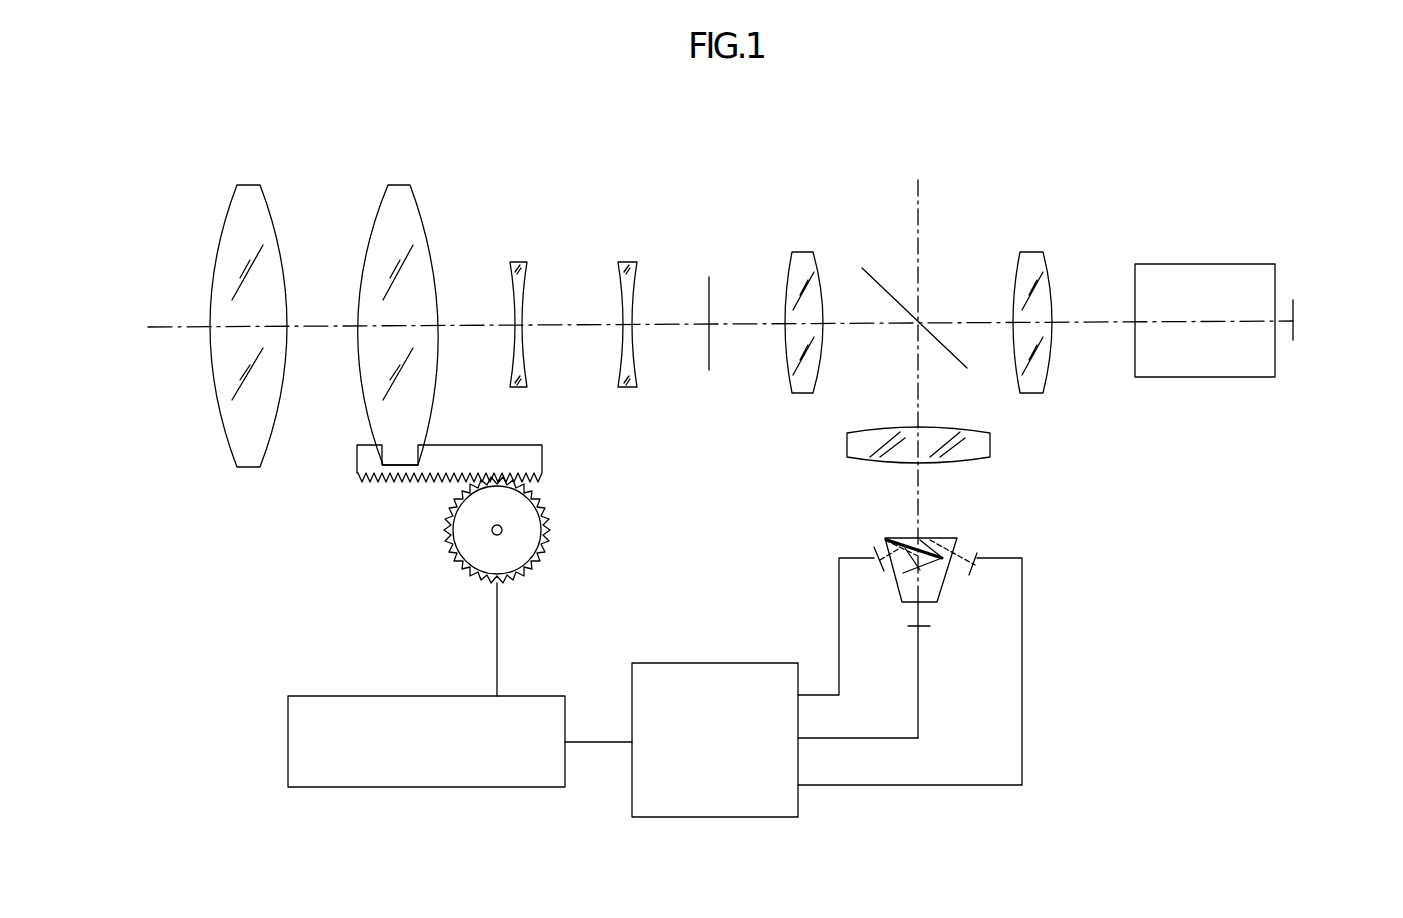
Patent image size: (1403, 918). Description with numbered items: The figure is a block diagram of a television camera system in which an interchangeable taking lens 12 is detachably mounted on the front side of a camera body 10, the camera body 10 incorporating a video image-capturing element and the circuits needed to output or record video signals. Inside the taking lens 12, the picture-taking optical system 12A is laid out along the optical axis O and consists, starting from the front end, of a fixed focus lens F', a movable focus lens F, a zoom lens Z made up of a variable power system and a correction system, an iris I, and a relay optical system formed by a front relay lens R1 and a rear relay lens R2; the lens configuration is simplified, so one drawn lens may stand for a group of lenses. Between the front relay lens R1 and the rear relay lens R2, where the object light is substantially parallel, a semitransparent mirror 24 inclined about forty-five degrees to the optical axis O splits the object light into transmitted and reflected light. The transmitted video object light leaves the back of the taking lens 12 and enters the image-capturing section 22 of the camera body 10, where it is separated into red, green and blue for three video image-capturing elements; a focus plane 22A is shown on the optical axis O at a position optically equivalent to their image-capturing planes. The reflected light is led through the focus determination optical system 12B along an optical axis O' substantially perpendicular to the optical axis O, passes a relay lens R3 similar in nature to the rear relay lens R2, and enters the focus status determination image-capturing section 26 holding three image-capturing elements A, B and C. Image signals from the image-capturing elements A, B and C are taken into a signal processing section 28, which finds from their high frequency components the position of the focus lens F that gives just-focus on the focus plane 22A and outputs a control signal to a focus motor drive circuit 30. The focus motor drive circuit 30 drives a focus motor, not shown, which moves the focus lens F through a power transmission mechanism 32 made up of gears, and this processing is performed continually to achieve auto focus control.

The camera body 10 is at (1297, 160).
The taking lens 12 is at (1050, 160).
The picture-taking optical system 12A is at (648, 511).
The focus determination optical system 12B is at (1103, 510).
The image-capturing section 22 is at (1265, 378).
The focus plane 22A is at (1295, 325).
The semitransparent mirror 24 is at (903, 300).
The focus status determination image-capturing section 26 is at (951, 524).
The signal processing section 28 is at (700, 672).
The focus motor drive circuit 30 is at (477, 787).
The power transmission mechanism 32 is at (400, 548).
The optical axis O is at (163, 282).
The optical axis O' is at (850, 482).
The focus lens F is at (375, 327).
The fixed focus lens F' is at (248, 359).
The zoom lens Z is at (643, 397).
The iris I is at (712, 352).
The front relay lens R1 is at (800, 258).
The rear relay lens R2 is at (1027, 258).
The relay lens R3 is at (990, 437).
The image-capturing element A is at (928, 628).
The image-capturing element B is at (876, 556).
The image-capturing element C is at (975, 565).